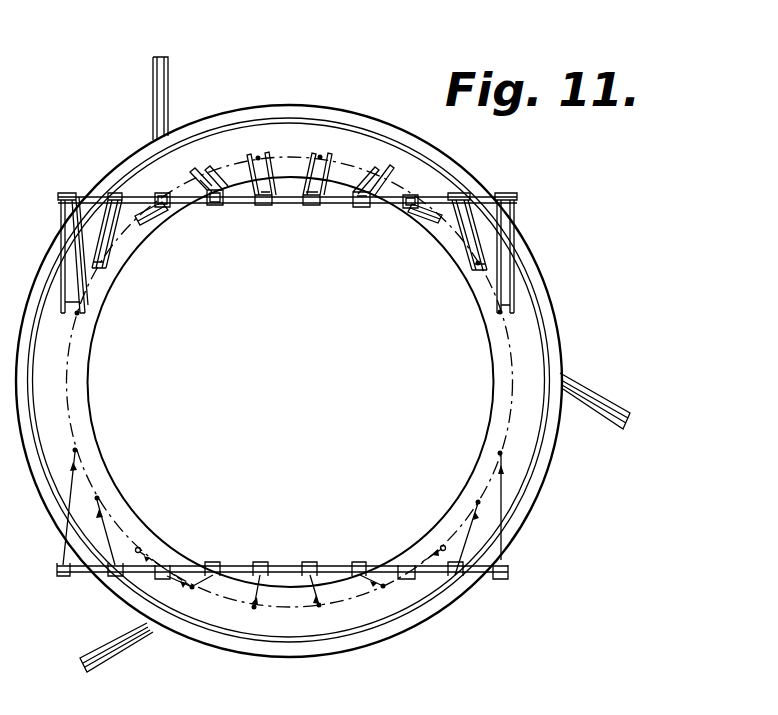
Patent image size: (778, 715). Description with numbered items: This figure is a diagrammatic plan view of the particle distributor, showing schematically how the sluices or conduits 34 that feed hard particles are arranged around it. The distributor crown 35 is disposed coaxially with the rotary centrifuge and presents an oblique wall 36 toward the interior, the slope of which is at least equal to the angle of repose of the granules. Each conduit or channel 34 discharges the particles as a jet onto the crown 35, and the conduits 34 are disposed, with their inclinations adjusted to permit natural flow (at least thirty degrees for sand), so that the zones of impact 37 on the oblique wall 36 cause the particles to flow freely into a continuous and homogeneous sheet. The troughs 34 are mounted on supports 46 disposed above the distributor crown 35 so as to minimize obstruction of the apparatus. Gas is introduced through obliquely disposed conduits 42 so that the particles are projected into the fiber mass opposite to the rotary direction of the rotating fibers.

The sluice or conduit 34 is at (163, 206).
The distributor crown 35 is at (530, 532).
The oblique wall 36 is at (512, 477).
The zones of impact 37 is at (320, 157).
The conduits 42 is at (602, 406).
The supports 46 is at (483, 200).